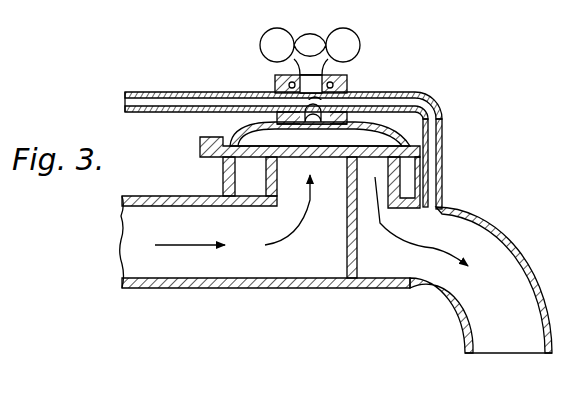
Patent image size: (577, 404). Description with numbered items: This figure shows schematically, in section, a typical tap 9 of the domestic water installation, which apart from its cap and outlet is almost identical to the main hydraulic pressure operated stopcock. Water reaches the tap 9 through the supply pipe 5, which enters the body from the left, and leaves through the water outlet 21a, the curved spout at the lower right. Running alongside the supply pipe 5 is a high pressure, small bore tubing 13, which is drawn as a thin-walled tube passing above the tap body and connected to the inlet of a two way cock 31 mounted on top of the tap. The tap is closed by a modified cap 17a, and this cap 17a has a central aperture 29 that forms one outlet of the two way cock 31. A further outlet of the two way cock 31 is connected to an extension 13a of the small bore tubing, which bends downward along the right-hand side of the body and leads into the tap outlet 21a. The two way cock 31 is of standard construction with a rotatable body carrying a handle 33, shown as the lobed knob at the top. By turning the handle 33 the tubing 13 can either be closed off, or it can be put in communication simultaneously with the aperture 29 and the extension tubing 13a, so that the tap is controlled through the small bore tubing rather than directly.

The supply pipe 5 is at (250, 272).
The tap 9 is at (444, 168).
The small bore tubing 13 is at (166, 72).
The extension of the small bore tubing 13a is at (428, 110).
The modified cap 17a is at (240, 129).
The water outlet 21a is at (512, 312).
The central aperture 29 is at (307, 125).
The two way cock 31 is at (358, 73).
The handle 33 is at (263, 46).